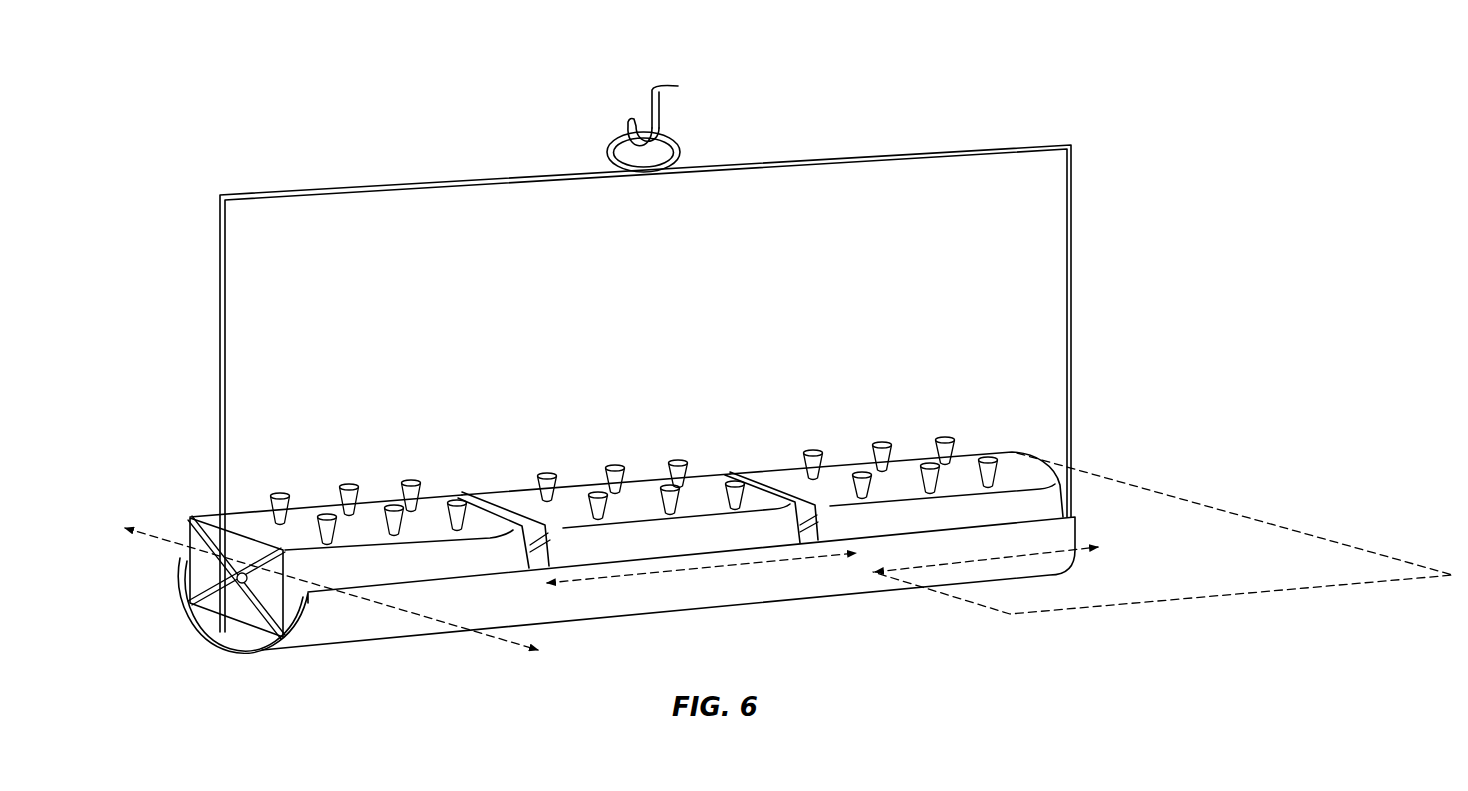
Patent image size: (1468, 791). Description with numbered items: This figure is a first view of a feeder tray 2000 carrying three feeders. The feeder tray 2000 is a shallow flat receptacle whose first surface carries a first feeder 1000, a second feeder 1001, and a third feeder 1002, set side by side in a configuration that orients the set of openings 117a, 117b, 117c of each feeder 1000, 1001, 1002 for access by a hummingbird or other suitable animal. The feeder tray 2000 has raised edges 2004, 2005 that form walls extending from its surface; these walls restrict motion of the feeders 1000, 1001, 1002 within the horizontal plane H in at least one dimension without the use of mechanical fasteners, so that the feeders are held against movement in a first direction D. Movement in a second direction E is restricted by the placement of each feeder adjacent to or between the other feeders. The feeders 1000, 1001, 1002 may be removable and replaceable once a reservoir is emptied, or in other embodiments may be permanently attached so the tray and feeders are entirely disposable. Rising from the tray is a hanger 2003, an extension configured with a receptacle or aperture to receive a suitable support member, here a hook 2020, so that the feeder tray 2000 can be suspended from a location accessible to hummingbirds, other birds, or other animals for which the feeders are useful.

The hanger 2003 is at (220, 256).
The hook 2020 is at (663, 122).
The feeder tray 2000 is at (358, 672).
The raised edge 2004 is at (178, 577).
The raised edge 2005 is at (287, 612).
The first feeder 1000 is at (370, 458).
The second feeder 1001 is at (640, 436).
The third feeder 1002 is at (896, 417).
The set of openings 117a is at (418, 467).
The set of openings 117b is at (683, 442).
The set of openings 117c is at (947, 423).
The first direction D is at (162, 535).
The second direction E is at (728, 566).
The horizontal plane H is at (1147, 479).